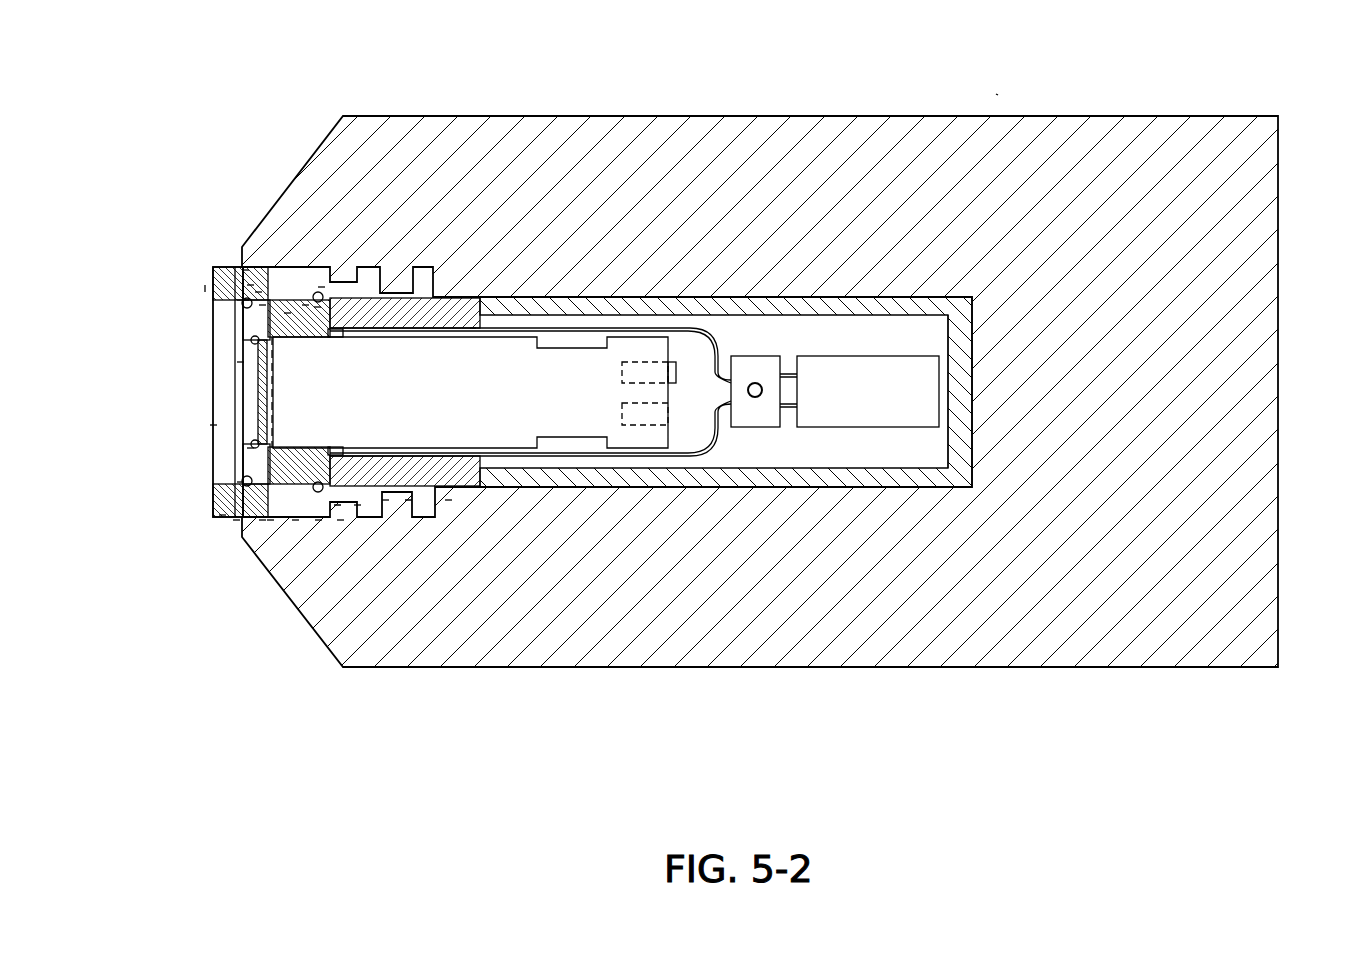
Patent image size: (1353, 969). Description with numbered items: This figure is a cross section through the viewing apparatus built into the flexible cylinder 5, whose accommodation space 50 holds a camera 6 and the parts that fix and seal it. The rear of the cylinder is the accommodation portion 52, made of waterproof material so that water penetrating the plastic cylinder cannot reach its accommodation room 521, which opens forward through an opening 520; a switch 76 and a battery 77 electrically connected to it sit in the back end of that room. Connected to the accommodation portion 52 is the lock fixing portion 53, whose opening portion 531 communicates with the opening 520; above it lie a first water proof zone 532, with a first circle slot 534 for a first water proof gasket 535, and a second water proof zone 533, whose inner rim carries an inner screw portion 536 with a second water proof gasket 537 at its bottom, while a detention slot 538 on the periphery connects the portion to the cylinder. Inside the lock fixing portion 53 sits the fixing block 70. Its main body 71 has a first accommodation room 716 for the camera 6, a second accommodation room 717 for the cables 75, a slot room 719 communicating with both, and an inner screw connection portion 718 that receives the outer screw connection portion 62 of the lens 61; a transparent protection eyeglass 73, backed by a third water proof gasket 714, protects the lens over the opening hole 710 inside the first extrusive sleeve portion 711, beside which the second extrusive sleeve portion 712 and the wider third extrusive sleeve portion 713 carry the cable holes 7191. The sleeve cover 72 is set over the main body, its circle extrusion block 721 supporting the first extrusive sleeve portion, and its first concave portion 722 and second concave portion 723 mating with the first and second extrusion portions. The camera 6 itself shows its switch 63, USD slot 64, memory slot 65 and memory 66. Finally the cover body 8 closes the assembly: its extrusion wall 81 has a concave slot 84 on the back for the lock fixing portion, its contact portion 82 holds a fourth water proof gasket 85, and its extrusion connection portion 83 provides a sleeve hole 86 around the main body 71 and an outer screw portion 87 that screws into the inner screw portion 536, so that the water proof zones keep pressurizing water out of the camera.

The flexible cylinder 5 is at (998, 98).
The accommodation space 50 is at (927, 298).
The accommodation portion 52 is at (835, 305).
The accommodation room 521 is at (900, 330).
The opening 520 is at (448, 500).
The lock fixing portion 53 is at (430, 295).
The opening portion 531 is at (473, 330).
The first water proof zone 532 is at (322, 287).
The second water proof zone 533 is at (305, 305).
The first circle slot 534 is at (350, 295).
The first water proof gasket 535 is at (385, 500).
The inner screw portion 536 is at (236, 520).
The second water proof gasket 537 is at (340, 520).
The detention slot 538 is at (337, 505).
The camera 6 is at (618, 336).
The lens 61 is at (265, 432).
The outer screw connection portion 62 is at (262, 520).
The switch 63 is at (340, 335).
The USD slot 64 is at (622, 414).
The memory slot 65 is at (672, 365).
The memory 66 is at (622, 372).
The fixing block 70 is at (233, 335).
The main body 71 is at (295, 520).
The sleeve cover 72 is at (243, 502).
The transparent protection eyeglass 73 is at (243, 435).
The cables 75 is at (577, 323).
The switch 76 is at (753, 370).
The battery 77 is at (853, 368).
The opening hole 710 is at (213, 425).
The first extrusive sleeve portion 711 is at (250, 448).
The second extrusive sleeve portion 712 is at (222, 515).
The third extrusive sleeve portion 713 is at (357, 505).
The third water proof gasket 714 is at (245, 300).
The first accommodation room 716 is at (317, 307).
The second accommodation room 717 is at (385, 295).
The inner screw connection portion 718 is at (250, 285).
The slot room 719 is at (313, 517).
The cable holes 7191 is at (318, 520).
The circle extrusion block 721 is at (240, 482).
The first concave portion 722 is at (240, 362).
The second concave portion 723 is at (258, 292).
The cover body 8 is at (207, 288).
The extrusion wall 81 is at (262, 305).
The contact portion 82 is at (240, 303).
The extrusion connection portion 83 is at (287, 313).
The concave slot 84 is at (240, 300).
The fourth water proof gasket 85 is at (243, 333).
The sleeve hole 86 is at (270, 520).
The outer screw portion 87 is at (245, 270).